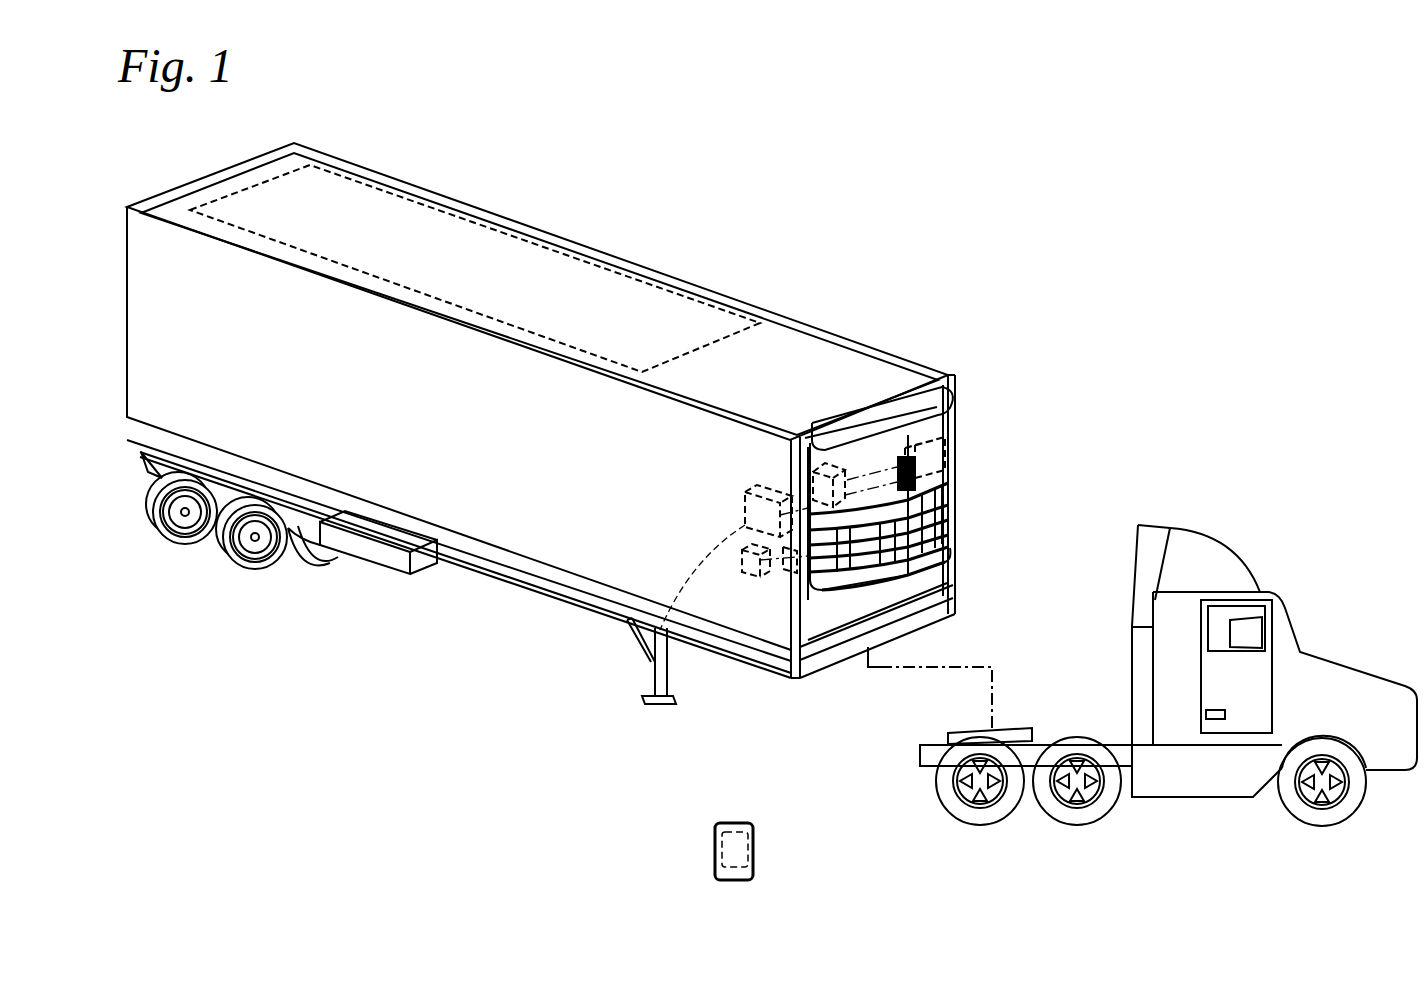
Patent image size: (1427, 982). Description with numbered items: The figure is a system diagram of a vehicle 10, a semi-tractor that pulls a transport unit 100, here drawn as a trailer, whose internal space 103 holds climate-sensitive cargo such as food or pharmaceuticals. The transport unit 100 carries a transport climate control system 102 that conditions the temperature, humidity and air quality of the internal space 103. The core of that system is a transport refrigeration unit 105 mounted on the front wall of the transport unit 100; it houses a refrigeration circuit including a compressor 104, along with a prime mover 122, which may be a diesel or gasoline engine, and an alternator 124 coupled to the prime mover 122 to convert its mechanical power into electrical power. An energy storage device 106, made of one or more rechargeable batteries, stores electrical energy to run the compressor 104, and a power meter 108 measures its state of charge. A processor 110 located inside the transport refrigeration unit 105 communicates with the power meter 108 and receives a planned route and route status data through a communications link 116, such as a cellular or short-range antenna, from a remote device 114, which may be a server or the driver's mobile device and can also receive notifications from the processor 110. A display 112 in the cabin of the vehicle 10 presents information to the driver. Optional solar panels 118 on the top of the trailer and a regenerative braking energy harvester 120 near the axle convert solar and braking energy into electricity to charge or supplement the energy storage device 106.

The vehicle 10 is at (1275, 507).
The transport unit 100 is at (262, 152).
The transport climate control system 102 is at (945, 438).
The internal space 103 is at (440, 565).
The compressor 104 is at (880, 580).
The transport refrigeration unit 105 is at (958, 388).
The energy storage device 106 is at (823, 455).
The power meter 108 is at (627, 645).
The processor 110 is at (797, 642).
The display 112 is at (1278, 612).
The remote device 114 is at (757, 840).
The communications link 116 is at (648, 680).
The solar panels 118 is at (395, 195).
The regenerative braking energy harvester 120 is at (330, 547).
The prime mover 122 is at (957, 503).
The alternator 124 is at (947, 452).